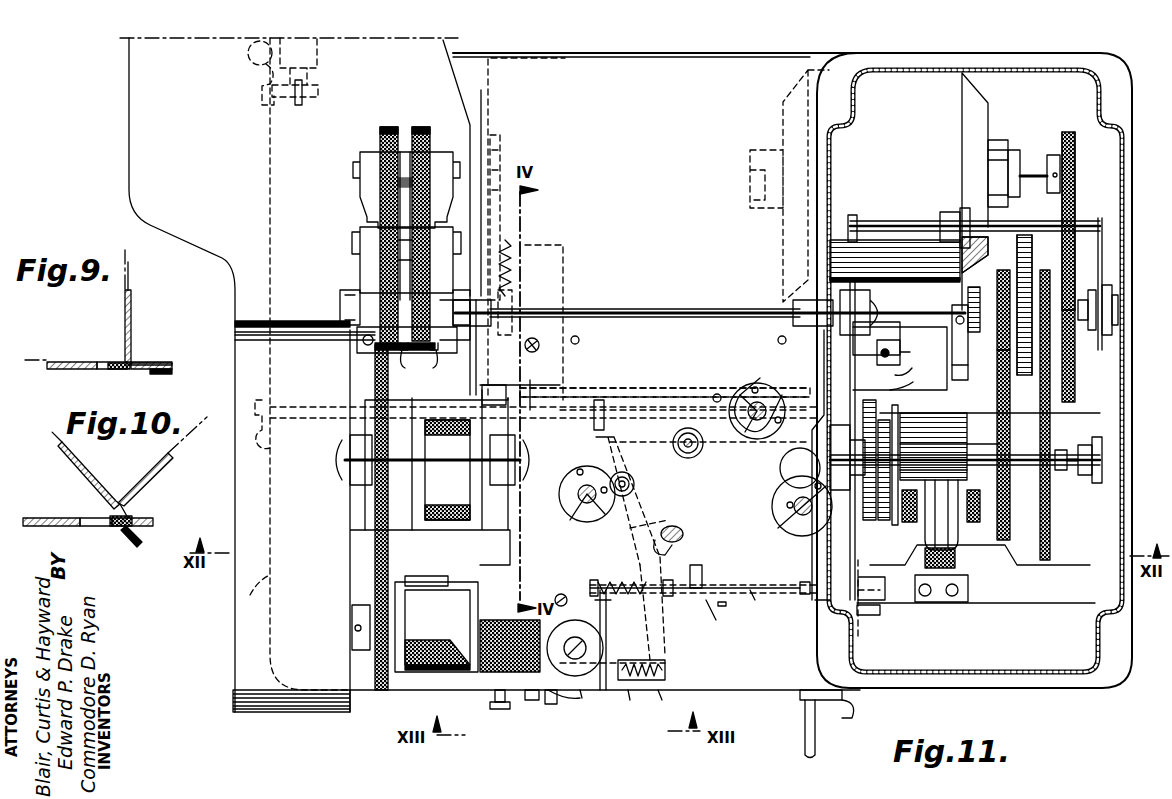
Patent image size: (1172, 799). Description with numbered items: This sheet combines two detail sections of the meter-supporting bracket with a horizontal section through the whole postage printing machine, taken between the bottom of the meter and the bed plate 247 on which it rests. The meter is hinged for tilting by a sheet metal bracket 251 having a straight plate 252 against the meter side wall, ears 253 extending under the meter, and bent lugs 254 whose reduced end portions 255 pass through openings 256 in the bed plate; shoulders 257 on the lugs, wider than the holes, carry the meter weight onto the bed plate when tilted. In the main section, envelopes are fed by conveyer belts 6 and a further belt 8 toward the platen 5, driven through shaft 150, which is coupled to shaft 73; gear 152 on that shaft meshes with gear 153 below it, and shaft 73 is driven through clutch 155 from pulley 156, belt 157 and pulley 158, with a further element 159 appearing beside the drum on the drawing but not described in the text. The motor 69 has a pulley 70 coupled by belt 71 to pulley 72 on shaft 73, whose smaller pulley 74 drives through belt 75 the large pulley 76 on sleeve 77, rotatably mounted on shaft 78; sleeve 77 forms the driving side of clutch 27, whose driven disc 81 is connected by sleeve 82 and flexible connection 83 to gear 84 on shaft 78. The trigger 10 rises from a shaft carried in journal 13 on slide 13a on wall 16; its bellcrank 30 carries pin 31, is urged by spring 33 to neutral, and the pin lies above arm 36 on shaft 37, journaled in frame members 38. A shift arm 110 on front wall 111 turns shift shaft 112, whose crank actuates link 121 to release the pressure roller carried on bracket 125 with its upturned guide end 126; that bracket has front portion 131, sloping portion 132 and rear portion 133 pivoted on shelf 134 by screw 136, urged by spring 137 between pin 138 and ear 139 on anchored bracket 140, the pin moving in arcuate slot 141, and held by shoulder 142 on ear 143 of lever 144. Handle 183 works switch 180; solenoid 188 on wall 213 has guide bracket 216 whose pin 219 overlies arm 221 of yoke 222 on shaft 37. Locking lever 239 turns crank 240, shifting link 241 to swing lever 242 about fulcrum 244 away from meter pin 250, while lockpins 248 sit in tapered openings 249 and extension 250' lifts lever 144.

In FIG. 11, the platen 5 is at (420, 494).
In FIG. 11, the conveyer belts 6 is at (421, 127).
In FIG. 11, the conveyer belt 8 is at (375, 558).
In FIG. 11, the trigger 10 is at (419, 370).
In FIG. 11, the supporting journal 13 is at (466, 338).
In FIG. 11, the slide 13a is at (500, 175).
In FIG. 11, the wall 16 is at (492, 90).
In FIG. 11, the clutch 27 is at (974, 470).
In FIG. 11, the bellcrank 30 is at (488, 355).
In FIG. 11, the pin 31 is at (512, 368).
In FIG. 11, the tension spring 33 is at (510, 264).
In FIG. 11, the arm 36 is at (495, 396).
In FIG. 11, the shaft 37 is at (633, 390).
In FIG. 11, the frame members 38 is at (850, 245).
In FIG. 11, the motor 69 is at (975, 122).
In FIG. 11, the pulley 70 is at (1060, 150).
In FIG. 11, the belt 71 is at (1075, 205).
In FIG. 11, the pulley 72 is at (1076, 362).
In FIG. 11, the shaft 73 is at (1105, 308).
In FIG. 11, the smaller pulley 74 is at (1039, 305).
In FIG. 11, the belt 75 is at (1050, 424).
In FIG. 11, the large pulley 76 is at (1058, 512).
In FIG. 11, the sleeve 77 is at (1022, 470).
In FIG. 11, the shaft 78 is at (1076, 470).
In FIG. 11, the disc 81 is at (948, 462).
In FIG. 11, the sleeve 82 is at (904, 455).
In FIG. 11, the flexible connection 83 is at (886, 518).
In FIG. 11, the gear 84 is at (870, 520).
In FIG. 11, the shift arm 110 is at (258, 448).
In FIG. 11, the front wall 111 is at (258, 590).
In FIG. 11, the shift shaft 112 is at (540, 418).
In FIG. 11, the link 121 is at (608, 558).
In FIG. 11, the bracket 125 is at (436, 627).
In FIG. 11, the upturned end 126 is at (426, 576).
In FIG. 11, the front horizontal portion 131 is at (425, 655).
In FIG. 11, the downwardly sloping portion 132 is at (490, 672).
In FIG. 11, the rear flat portion 133 is at (607, 648).
In FIG. 11, the shelf 134 is at (604, 622).
In FIG. 11, the screw 136 is at (575, 648).
In FIG. 11, the tension spring 137 is at (677, 701).
In FIG. 11, the pin 138 is at (572, 706).
In FIG. 11, the ear 139 is at (666, 678).
In FIG. 11, the bracket 140 is at (648, 670).
In FIG. 11, the arcuate slot 141 is at (599, 696).
In FIG. 11, the shoulder 142 is at (530, 700).
In FIG. 11, the offset ear 143 is at (548, 710).
In FIG. 11, the lever 144 is at (646, 702).
In FIG. 11, the shaft 150 is at (668, 310).
In FIG. 11, the gear 152 is at (1030, 278).
In FIG. 11, the gear 153 is at (1023, 445).
In FIG. 11, the clutch 155 is at (970, 355).
In FIG. 11, the pulley 156 is at (995, 278).
In FIG. 11, the belt 157 is at (1005, 372).
In FIG. 11, the pulley 158 is at (1000, 518).
In FIG. 11, the gear 159 is at (968, 296).
In FIG. 11, the switch 180 is at (312, 62).
In FIG. 11, the starting handle 183 is at (255, 65).
In FIG. 11, the solenoid 188 is at (902, 345).
In FIG. 11, the transverse wall member 213 is at (824, 368).
In FIG. 11, the guide bracket 216 is at (888, 348).
In FIG. 11, the pin 219 is at (924, 350).
In FIG. 11, the arm 221 is at (922, 366).
In FIG. 11, the yoke 222 is at (920, 381).
In FIG. 11, the locking lever 239 is at (820, 710).
In FIG. 11, the crank 240 is at (876, 614).
In FIG. 11, the link 241 is at (773, 603).
In FIG. 11, the lever 242 is at (648, 512).
In FIG. 11, the fulcrum 244 is at (634, 488).
In FIG. 9, the bed plate 247 is at (72, 370).
In FIG. 10, the bed plate 247 is at (42, 517).
In FIG. 11, the bed plate 247 is at (729, 619).
In FIG. 11, the lockpins 248 is at (748, 402).
In FIG. 11, the tapered opening 249 is at (738, 395).
In FIG. 11, the pin 250 is at (679, 525).
In FIG. 11, the extension 250' is at (672, 608).
In FIG. 9, the sheet metal bracket 251 is at (140, 289).
In FIG. 9, the straight plate 252 is at (125, 316).
In FIG. 9, the ears 253 is at (112, 362).
In FIG. 10, the ears 253 is at (100, 492).
In FIG. 9, the bent lugs 254 is at (138, 360).
In FIG. 10, the bent lugs 254 is at (135, 506).
In FIG. 9, the reduced end portions 255 is at (168, 374).
In FIG. 10, the reduced end portions 255 is at (146, 532).
In FIG. 9, the openings 256 is at (135, 372).
In FIG. 10, the openings 256 is at (120, 528).
In FIG. 11, the openings 256 is at (725, 600).
In FIG. 9, the shoulders 257 is at (150, 360).
In FIG. 10, the shoulders 257 is at (138, 518).